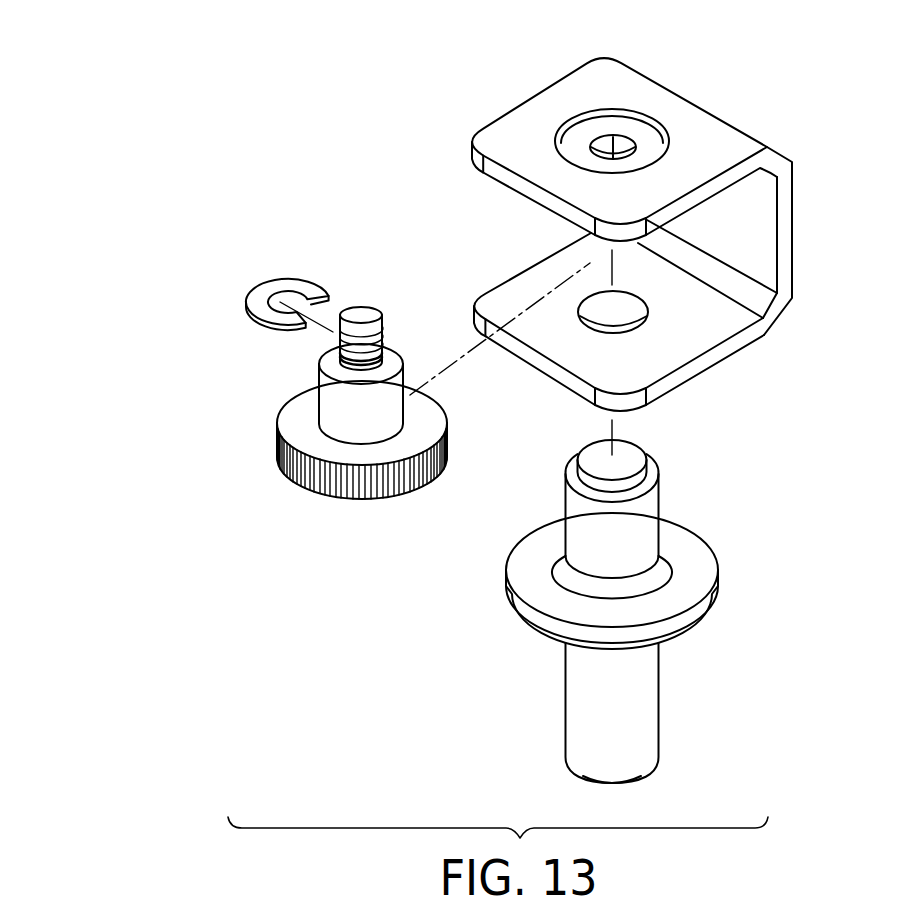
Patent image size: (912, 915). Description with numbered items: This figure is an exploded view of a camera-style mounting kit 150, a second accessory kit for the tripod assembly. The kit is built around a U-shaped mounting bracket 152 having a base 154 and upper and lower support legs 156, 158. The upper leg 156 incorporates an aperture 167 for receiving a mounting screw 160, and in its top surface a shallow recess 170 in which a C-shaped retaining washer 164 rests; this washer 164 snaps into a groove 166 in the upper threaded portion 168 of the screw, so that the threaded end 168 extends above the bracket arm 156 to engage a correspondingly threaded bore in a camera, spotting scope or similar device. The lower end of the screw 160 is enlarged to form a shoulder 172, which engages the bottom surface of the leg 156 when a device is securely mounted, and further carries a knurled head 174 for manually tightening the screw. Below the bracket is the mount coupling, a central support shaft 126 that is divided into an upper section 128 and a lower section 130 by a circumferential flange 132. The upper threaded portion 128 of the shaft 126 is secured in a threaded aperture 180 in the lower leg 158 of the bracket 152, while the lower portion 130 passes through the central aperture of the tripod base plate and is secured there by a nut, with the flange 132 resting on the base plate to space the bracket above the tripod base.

The camera-style mounting kit 150 is at (318, 155).
The U-shaped mounting bracket 152 is at (777, 343).
The base 154 is at (749, 210).
The upper support leg 156 is at (703, 152).
The lower support leg 158 is at (670, 352).
The mounting screw 160 is at (253, 439).
The C-shaped retaining washer 164 is at (262, 282).
The groove 166 is at (325, 350).
The through hole 167 is at (620, 140).
The upper threaded portion 168 is at (372, 340).
The shallow recess 170 is at (577, 135).
The shoulder 172 is at (388, 365).
The knurled head 174 is at (430, 468).
The threaded aperture 180 is at (607, 325).
The central support shaft 126 is at (554, 697).
The upper section 128 is at (648, 502).
The lower section 130 is at (645, 683).
The circumferential flange 132 is at (698, 560).